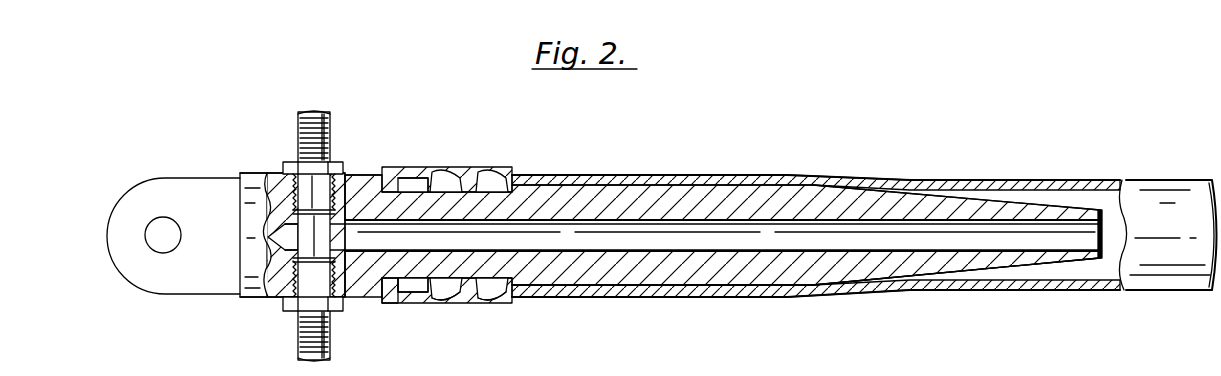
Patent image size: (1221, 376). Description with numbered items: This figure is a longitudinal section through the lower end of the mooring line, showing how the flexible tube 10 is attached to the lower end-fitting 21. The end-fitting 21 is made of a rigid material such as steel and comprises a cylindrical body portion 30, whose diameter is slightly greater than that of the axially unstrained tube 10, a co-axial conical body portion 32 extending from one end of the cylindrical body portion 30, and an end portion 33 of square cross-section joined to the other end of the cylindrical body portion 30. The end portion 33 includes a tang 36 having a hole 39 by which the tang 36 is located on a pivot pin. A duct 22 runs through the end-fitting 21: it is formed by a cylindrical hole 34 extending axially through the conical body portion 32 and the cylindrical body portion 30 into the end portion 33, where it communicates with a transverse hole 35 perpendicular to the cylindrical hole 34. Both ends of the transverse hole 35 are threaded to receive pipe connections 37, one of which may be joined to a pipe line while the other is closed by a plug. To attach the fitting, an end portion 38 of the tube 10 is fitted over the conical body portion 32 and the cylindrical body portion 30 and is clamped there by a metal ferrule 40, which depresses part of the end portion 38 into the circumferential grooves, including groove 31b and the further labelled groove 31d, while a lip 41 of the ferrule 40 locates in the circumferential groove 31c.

The tube 10 is at (730, 170).
The lower end-fitting 21 is at (385, 157).
The duct 22 is at (490, 234).
The cylindrical body portion 30 is at (642, 203).
The circumferential groove 31b is at (445, 303).
The circumferential groove 31c is at (373, 300).
The seal groove portion 31d is at (493, 303).
The conical body portion 32 is at (995, 213).
The end portion 33 is at (275, 192).
The cylindrical hole 34 is at (667, 245).
The transverse hole 35 is at (370, 168).
The tang 36 is at (207, 197).
The pipe connections 37 is at (298, 125).
The end portion of the tube 38 is at (440, 178).
The hole 39 is at (168, 217).
The metal ferrule 40 is at (485, 176).
The lip 41 is at (388, 300).